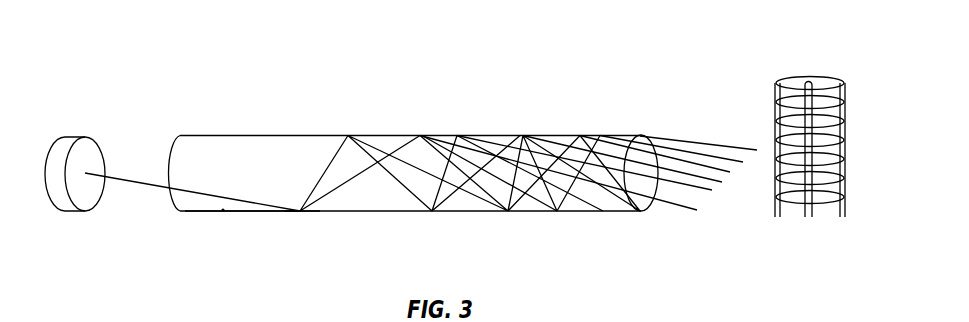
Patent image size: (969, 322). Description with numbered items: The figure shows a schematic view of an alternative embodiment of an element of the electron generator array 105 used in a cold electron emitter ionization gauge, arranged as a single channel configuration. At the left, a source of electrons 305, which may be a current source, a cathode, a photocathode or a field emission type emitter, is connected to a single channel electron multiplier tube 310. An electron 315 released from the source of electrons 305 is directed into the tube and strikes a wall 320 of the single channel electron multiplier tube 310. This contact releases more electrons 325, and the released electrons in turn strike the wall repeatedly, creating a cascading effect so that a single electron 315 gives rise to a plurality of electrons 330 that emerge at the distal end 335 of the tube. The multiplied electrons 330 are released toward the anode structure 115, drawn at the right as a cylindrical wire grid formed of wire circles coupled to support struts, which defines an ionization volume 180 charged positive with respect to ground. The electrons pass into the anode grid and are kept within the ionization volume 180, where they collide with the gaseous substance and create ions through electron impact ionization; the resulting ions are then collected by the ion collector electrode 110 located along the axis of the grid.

The electron generator array 105 is at (118, 80).
The source of electrons 305 is at (72, 137).
The electron 315 is at (143, 185).
The wall 320 is at (223, 210).
The single channel electron multiplier tube 310 is at (257, 212).
The electrons 325 is at (328, 168).
The plurality of electrons 330 is at (672, 203).
The distal end 335 is at (650, 137).
The ionization volume 180 is at (794, 84).
The ion collector electrode 110 is at (809, 80).
The anode structure 115 is at (823, 205).